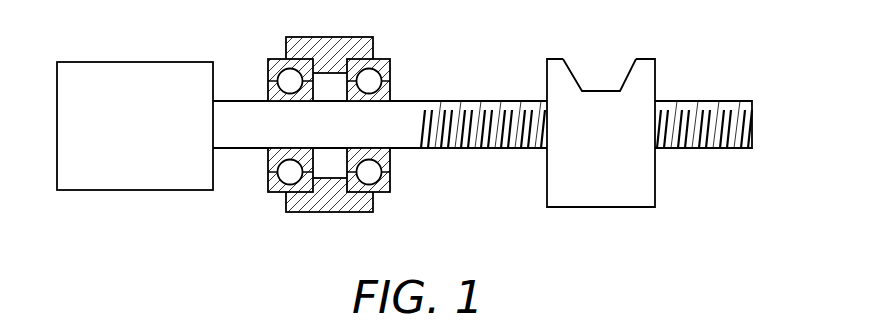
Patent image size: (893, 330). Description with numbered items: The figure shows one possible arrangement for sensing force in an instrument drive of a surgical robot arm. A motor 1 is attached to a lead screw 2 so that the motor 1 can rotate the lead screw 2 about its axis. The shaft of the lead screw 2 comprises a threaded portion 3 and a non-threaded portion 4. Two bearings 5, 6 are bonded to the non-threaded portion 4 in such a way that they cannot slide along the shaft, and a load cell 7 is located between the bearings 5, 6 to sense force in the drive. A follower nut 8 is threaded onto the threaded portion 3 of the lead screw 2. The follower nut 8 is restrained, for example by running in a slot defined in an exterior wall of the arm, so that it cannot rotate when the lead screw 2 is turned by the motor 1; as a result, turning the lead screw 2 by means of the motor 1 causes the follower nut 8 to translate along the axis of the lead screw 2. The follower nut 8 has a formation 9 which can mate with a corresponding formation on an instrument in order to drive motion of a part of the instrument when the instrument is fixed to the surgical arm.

The motor 1 is at (137, 180).
The lead screw 2 is at (738, 164).
The threaded portion 3 is at (467, 140).
The non-threaded portion 4 is at (238, 113).
The bearing 5 is at (277, 58).
The bearing 6 is at (383, 58).
The load cell 7 is at (328, 0).
The follower nut 8 is at (638, 200).
The formation 9 is at (600, 83).